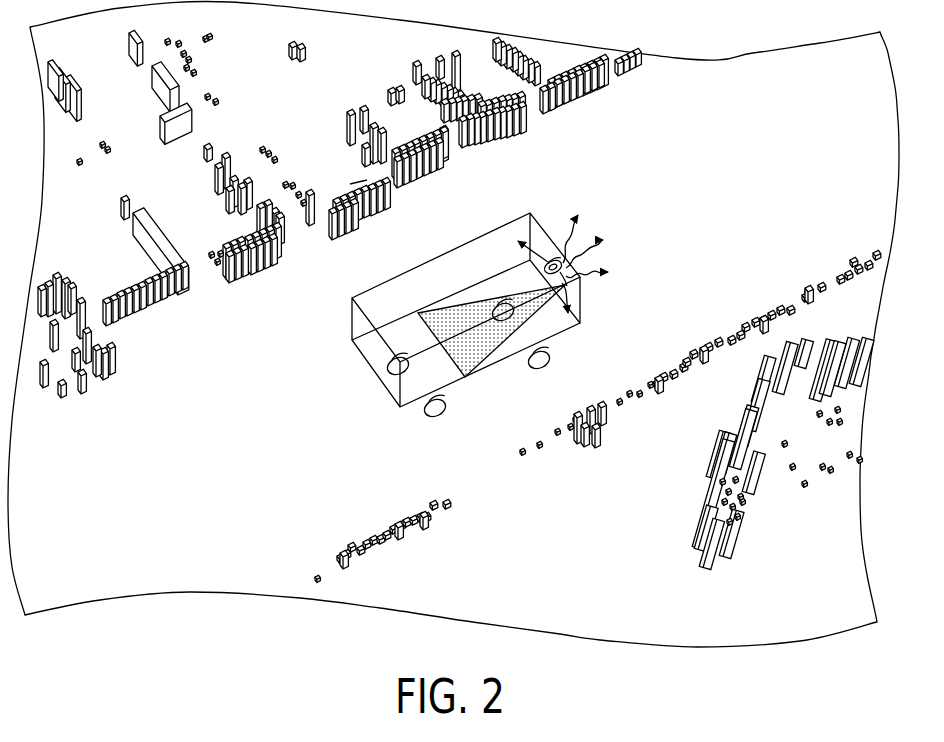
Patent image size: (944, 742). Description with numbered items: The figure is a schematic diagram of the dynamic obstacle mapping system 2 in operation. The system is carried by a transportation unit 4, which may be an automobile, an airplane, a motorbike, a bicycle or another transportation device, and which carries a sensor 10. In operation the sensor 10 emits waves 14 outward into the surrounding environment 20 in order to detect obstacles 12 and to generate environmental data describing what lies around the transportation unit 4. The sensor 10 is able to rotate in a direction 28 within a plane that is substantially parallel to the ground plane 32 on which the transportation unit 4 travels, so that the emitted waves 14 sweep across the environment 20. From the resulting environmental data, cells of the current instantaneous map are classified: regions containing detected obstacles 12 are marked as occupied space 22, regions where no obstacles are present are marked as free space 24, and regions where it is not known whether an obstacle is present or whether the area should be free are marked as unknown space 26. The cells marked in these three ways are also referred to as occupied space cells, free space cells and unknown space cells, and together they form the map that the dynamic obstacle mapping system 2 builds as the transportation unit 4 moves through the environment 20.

The dynamic obstacle mapping system 2 is at (485, 323).
The transportation unit 4 is at (367, 372).
The sensor 10 is at (566, 288).
The obstacles 12 is at (500, 140).
The waves 14 is at (613, 253).
The environment 20 is at (680, 233).
The occupied space 22 is at (425, 180).
The free space 24 is at (295, 238).
The unknown space 26 is at (333, 193).
The direction 28 is at (548, 262).
The ground plane 32 is at (557, 365).